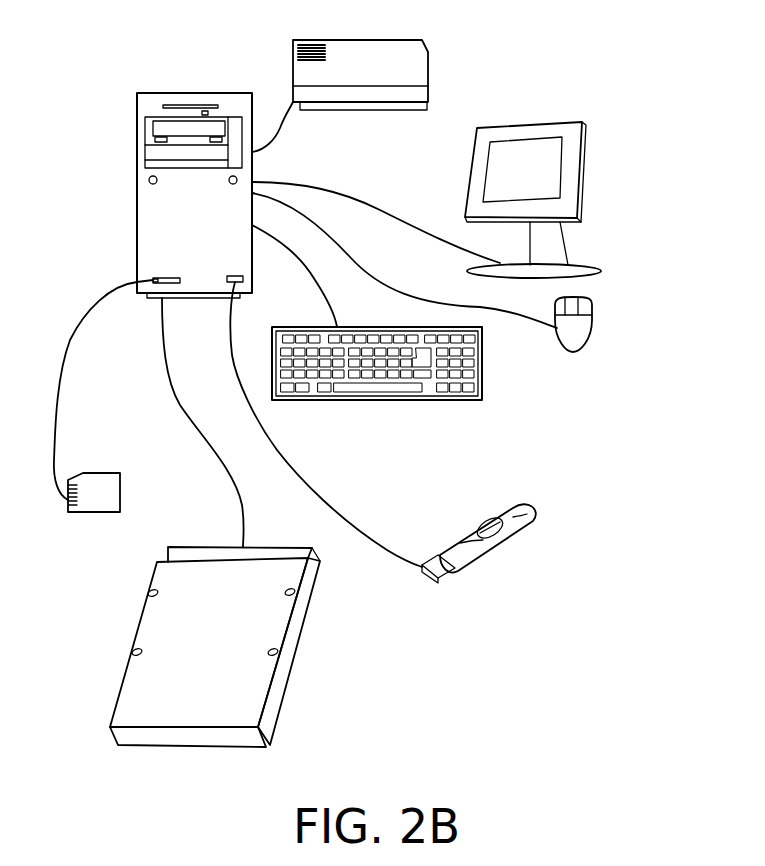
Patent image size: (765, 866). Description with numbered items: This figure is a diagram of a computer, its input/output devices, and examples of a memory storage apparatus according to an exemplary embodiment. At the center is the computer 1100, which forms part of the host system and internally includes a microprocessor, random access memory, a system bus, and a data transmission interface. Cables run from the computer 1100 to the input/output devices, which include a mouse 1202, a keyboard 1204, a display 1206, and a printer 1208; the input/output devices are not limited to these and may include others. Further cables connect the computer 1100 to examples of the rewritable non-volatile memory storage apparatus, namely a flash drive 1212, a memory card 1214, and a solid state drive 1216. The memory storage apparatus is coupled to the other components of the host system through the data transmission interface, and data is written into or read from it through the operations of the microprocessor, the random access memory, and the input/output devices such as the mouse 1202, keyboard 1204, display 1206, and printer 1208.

The computer 1100 is at (197, 92).
The mouse 1202 is at (593, 330).
The keyboard 1204 is at (482, 376).
The display 1206 is at (538, 120).
The printer 1208 is at (358, 40).
The flash drive 1212 is at (473, 528).
The memory card 1214 is at (122, 482).
The solid state drive 1216 is at (264, 534).